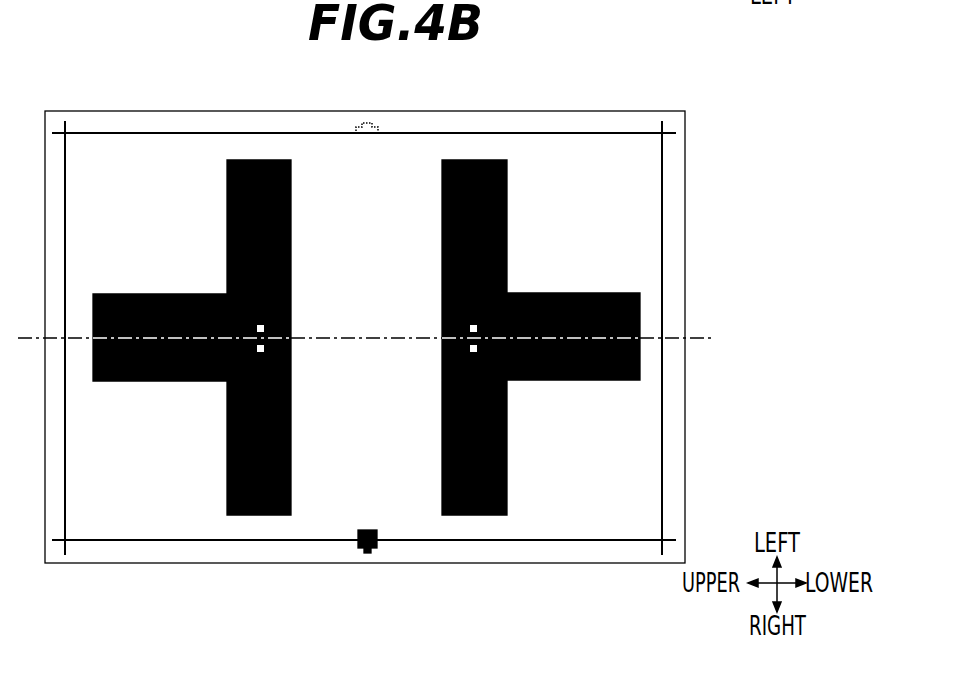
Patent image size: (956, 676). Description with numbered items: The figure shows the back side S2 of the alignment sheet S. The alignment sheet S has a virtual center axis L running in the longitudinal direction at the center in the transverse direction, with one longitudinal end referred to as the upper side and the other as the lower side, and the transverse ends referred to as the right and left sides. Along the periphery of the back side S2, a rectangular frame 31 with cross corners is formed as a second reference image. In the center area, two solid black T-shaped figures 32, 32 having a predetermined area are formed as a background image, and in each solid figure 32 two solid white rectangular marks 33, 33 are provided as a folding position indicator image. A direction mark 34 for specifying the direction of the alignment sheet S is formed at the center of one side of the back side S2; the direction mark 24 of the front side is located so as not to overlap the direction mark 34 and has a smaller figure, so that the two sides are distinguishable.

The alignment sheet S is at (593, 107).
The back side S2 is at (418, 153).
The rectangular frame 31 is at (165, 133).
The direction mark 24 is at (377, 122).
The solid black T-shaped figure 32 is at (227, 222).
The solid white rectangular mark 33 is at (264, 346).
The direction mark 34 is at (357, 548).
The virtual center axis L is at (378, 338).